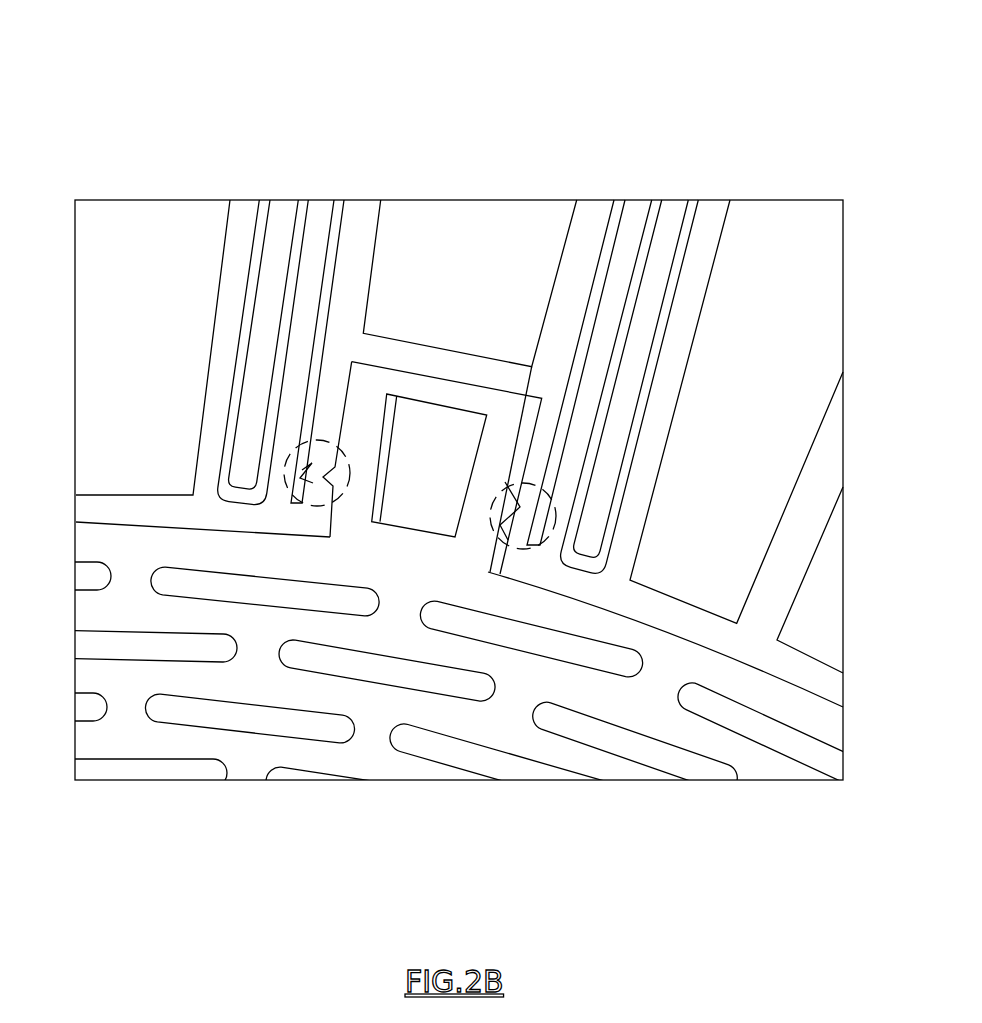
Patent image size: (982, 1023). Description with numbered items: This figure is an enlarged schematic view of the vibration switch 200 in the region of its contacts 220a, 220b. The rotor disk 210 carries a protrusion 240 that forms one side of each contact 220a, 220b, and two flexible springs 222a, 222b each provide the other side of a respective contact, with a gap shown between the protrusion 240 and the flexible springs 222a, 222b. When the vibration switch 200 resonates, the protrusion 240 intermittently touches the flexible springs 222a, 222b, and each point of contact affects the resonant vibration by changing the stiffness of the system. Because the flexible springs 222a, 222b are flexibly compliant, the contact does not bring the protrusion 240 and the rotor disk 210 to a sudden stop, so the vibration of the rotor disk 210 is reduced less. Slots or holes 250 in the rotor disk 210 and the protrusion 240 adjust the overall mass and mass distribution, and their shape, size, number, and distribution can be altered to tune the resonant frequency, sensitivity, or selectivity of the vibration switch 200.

The vibration switch 200 is at (774, 82).
The rotor disk 210 is at (668, 662).
The contact 220a is at (290, 462).
The contact 220b is at (557, 506).
The flexible spring 222a is at (315, 327).
The flexible spring 222b is at (591, 283).
The protrusion 240 is at (371, 381).
The slots or holes 250 is at (437, 430).